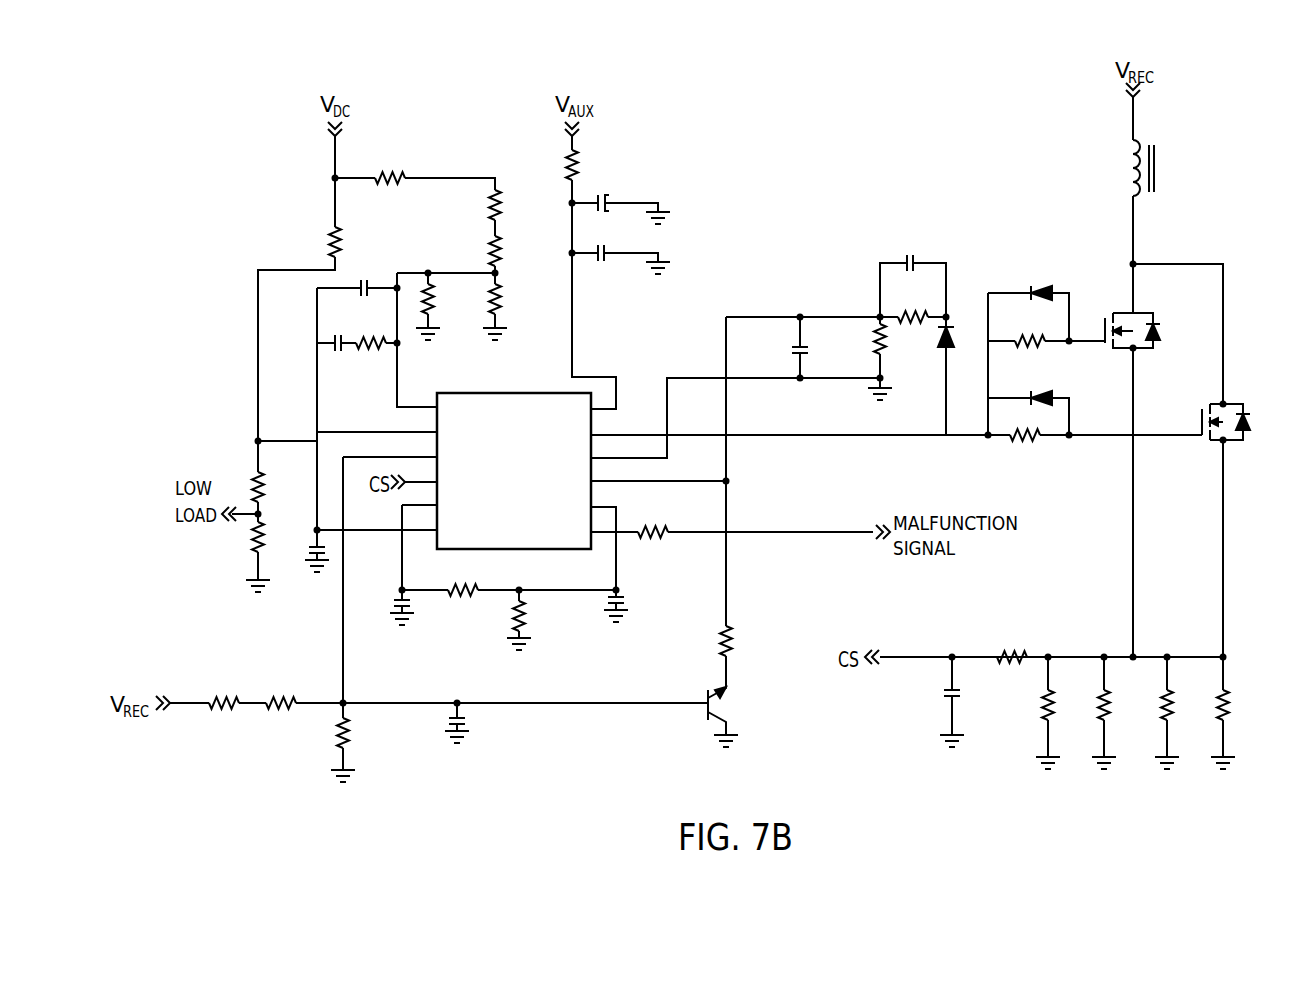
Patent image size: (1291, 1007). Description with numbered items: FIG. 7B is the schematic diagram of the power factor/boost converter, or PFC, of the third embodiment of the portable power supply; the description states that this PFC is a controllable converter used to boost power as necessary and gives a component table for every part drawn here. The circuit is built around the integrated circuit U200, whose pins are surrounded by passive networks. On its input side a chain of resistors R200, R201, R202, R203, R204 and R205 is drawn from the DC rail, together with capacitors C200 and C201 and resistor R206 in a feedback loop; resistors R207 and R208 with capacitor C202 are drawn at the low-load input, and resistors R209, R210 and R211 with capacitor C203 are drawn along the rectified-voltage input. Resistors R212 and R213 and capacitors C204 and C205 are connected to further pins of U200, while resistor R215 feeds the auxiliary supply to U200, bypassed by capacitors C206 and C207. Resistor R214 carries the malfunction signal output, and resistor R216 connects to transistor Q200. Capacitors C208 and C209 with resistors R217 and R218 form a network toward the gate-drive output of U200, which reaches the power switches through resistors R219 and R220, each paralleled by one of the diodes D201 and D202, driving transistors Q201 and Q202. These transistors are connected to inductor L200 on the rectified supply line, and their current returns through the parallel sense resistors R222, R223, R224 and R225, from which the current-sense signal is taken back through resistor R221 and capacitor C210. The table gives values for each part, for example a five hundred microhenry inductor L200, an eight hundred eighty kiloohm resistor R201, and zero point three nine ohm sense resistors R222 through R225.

The resistor R200 is at (314, 241).
The resistor R201 is at (390, 165).
The resistor R202 is at (517, 205).
The resistor R203 is at (517, 251).
The resistor R204 is at (517, 299).
The resistor R205 is at (450, 299).
The resistor R206 is at (369, 358).
The resistor R207 is at (281, 487).
The resistor R208 is at (237, 541).
The resistor R209 is at (227, 688).
The resistor R210 is at (279, 688).
The resistor R211 is at (366, 733).
The resistor R212 is at (463, 579).
The resistor R213 is at (543, 616).
The resistor R214 is at (653, 519).
The resistor R215 is at (593, 165).
The resistor R216 is at (750, 640).
The resistor R217 is at (902, 339).
The resistor R218 is at (913, 304).
The resistor R219 is at (1032, 330).
The resistor R220 is at (1030, 455).
The resistor R221 is at (1012, 642).
The resistor R222 is at (1032, 706).
The resistor R223 is at (1089, 706).
The resistor R224 is at (1151, 706).
The resistor R225 is at (1208, 706).
The capacitor C200 is at (368, 272).
The capacitor C201 is at (341, 327).
The capacitor C202 is at (297, 549).
The capacitor C203 is at (461, 743).
The capacitor C204 is at (383, 604).
The capacitor C205 is at (638, 604).
The capacitor C206 is at (606, 219).
The capacitor C207 is at (606, 267).
The capacitor C208 is at (821, 352).
The capacitor C209 is at (913, 249).
The capacitor C210 is at (929, 695).
The diode D201 is at (1035, 276).
The diode D202 is at (1034, 386).
The transistor Q200 is at (699, 705).
The transistor Q201 is at (1153, 331).
The transistor Q202 is at (1245, 424).
The inductor L200 is at (1163, 168).
The integrated circuit U200 is at (514, 457).